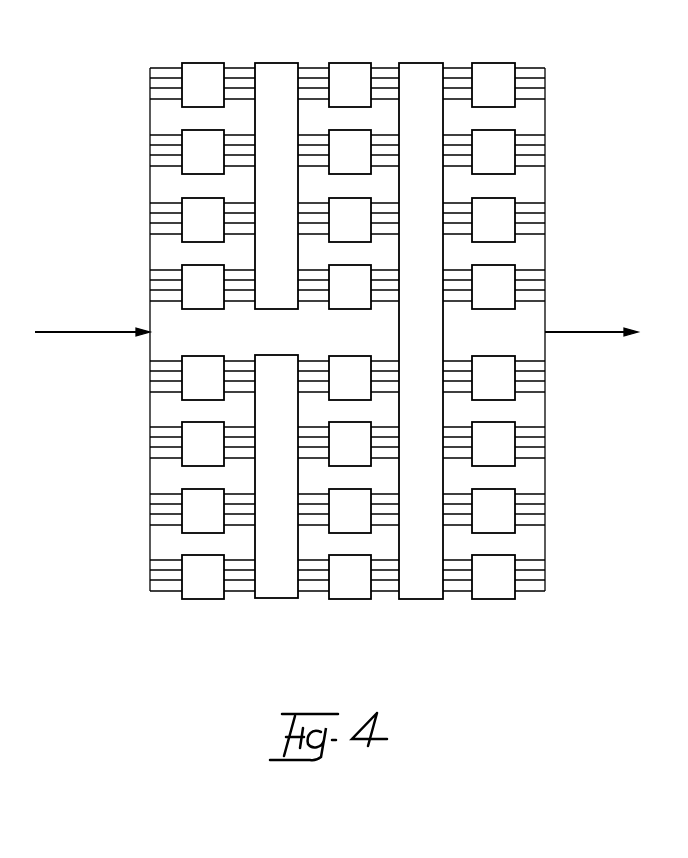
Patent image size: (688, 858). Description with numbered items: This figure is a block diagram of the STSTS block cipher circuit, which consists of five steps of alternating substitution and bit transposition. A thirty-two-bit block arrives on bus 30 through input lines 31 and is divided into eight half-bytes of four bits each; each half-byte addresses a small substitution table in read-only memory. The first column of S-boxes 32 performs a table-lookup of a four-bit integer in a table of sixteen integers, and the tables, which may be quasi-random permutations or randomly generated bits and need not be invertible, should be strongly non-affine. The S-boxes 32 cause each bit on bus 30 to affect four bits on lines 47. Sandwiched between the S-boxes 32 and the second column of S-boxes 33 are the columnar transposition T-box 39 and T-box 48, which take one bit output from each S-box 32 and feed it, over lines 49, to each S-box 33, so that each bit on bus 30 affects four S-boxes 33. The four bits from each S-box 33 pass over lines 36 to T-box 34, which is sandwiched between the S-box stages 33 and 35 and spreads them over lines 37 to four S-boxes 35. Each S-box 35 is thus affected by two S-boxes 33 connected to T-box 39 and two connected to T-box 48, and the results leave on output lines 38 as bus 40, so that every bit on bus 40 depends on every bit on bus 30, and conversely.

The bus 30 is at (92, 335).
The input lines 31 is at (163, 68).
The S-box 32 is at (203, 592).
The S-box 33 is at (352, 592).
The T-box 34 is at (417, 75).
The S-box 35 is at (490, 592).
The connection lines between second column and transmission block 36 is at (387, 590).
The connection lines between transmission block and third column 37 is at (458, 68).
The output lines 38 is at (532, 592).
The T-box 39 is at (276, 590).
The bus 40 is at (600, 335).
The lines 47 is at (235, 68).
The T-box 48 is at (283, 73).
The connection lines between upper transmission block and second column 49 is at (311, 68).